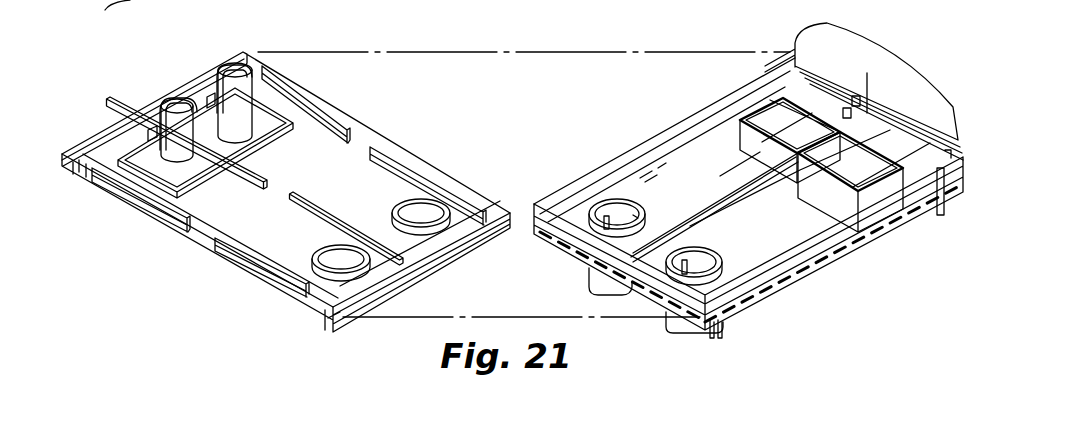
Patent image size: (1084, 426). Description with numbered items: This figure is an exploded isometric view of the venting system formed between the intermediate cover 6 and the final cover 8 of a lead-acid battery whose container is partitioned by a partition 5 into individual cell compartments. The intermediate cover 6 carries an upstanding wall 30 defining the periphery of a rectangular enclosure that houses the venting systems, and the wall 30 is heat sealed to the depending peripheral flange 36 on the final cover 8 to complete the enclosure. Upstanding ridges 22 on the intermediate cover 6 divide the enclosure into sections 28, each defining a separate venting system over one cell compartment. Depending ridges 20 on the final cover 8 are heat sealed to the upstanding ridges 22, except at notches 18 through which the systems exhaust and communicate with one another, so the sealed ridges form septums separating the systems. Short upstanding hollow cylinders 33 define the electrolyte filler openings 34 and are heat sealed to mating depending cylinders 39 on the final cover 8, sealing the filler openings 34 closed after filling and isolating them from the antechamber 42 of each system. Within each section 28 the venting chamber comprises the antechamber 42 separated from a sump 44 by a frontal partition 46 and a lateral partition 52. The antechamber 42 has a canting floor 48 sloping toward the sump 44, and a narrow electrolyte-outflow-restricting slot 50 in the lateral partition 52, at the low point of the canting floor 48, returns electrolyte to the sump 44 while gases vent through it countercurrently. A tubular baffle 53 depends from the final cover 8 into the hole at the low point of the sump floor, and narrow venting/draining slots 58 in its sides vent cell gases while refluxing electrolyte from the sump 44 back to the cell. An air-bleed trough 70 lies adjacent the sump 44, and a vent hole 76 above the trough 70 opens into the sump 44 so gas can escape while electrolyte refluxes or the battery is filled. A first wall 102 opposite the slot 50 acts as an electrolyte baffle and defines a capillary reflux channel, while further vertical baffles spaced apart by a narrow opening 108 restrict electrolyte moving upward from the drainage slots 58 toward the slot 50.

The partition 5 is at (428, 0).
The intermediate cover 6 is at (957, 182).
The final cover 8 is at (270, 293).
The notches 18 is at (185, 228).
The depending ridges 20 is at (220, 250).
The upstanding ridges 22 is at (712, 172).
The sections 28 is at (630, 190).
The upstanding wall 30 is at (720, 314).
The upstanding hollow cylinders 33 is at (592, 258).
The filler openings 34 is at (638, 217).
The depending peripheral flange 36 is at (73, 167).
The depending cylinders 39 is at (323, 250).
The antechamber 42 is at (666, 159).
The sump 44 is at (772, 118).
The frontal partition 46 is at (773, 175).
The canting floor 48 is at (647, 185).
The electrolyte-outflow-restricting slot 50 is at (803, 97).
The lateral partition 52 is at (767, 117).
The tubular baffle 53 is at (180, 127).
The venting/draining slots 58 is at (218, 118).
The trough 70 is at (847, 110).
The vent hole 76 is at (143, 130).
The first wall 102 is at (857, 100).
The narrow opening 108 is at (772, 153).